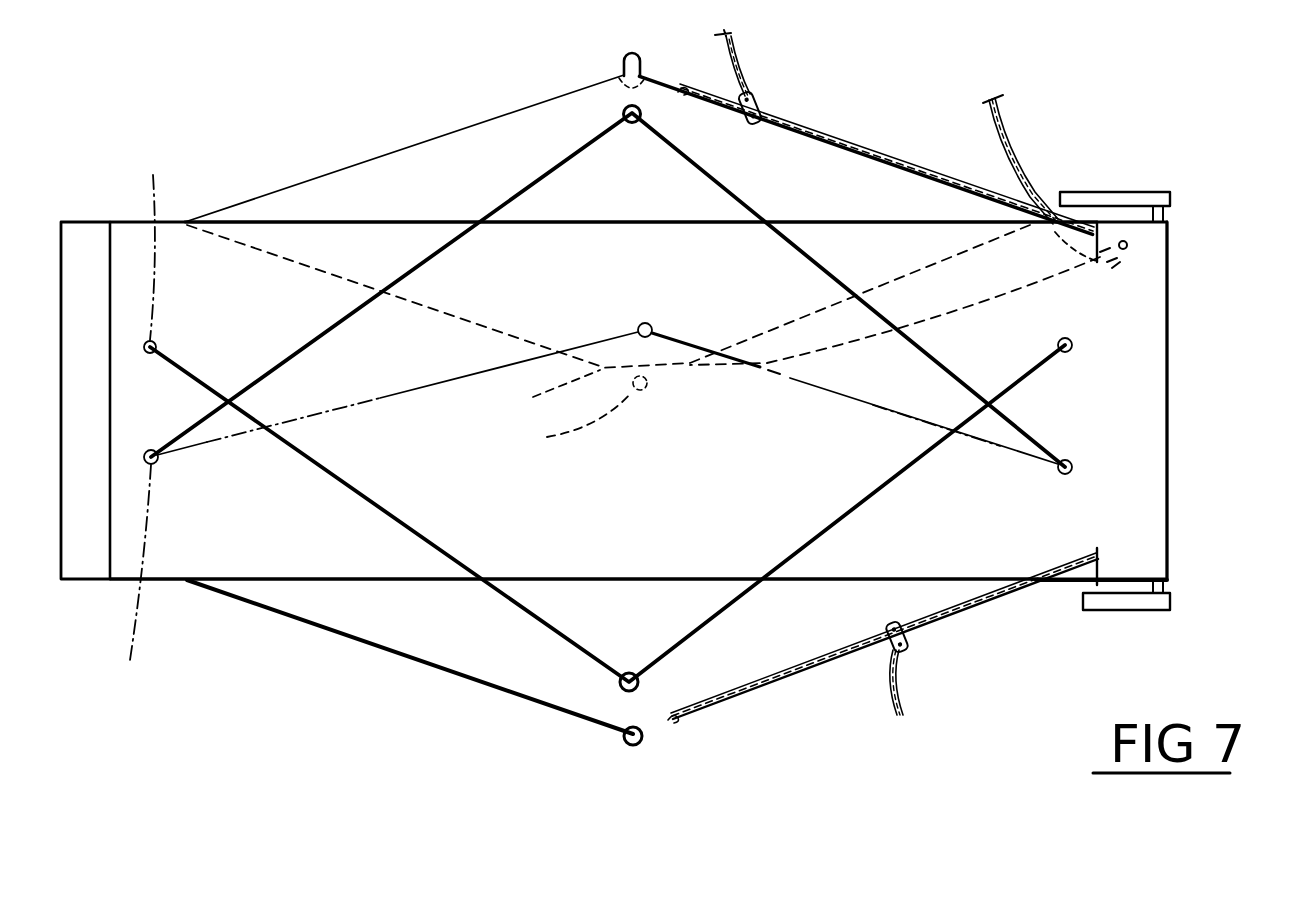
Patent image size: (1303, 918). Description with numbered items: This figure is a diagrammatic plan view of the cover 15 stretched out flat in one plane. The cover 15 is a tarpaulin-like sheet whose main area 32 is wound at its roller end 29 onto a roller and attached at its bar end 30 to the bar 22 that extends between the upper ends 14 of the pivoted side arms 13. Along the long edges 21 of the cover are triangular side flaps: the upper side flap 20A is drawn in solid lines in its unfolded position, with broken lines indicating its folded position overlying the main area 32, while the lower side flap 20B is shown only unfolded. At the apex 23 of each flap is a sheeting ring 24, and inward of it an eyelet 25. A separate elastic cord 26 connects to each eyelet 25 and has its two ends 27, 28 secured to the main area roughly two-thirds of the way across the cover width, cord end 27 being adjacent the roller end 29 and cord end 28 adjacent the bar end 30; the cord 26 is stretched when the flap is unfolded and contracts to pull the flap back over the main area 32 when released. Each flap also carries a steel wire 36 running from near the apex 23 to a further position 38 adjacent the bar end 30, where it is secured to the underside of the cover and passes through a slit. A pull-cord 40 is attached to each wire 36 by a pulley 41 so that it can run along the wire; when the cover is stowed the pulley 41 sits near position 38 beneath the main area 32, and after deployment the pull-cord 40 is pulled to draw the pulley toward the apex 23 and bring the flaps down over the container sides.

The side arms 13 is at (1098, 195).
The upper ends of the side arms 14 is at (1155, 200).
The cover 15 is at (1120, 318).
The upper side flap 20A is at (487, 130).
The lower side flap 20B is at (375, 627).
The long edges of the cover 21 is at (845, 222).
The bar 22 is at (1167, 220).
The apex of the side flap 23 is at (622, 78).
The sheeting ring 24 is at (626, 53).
The eyelet 25 is at (623, 110).
The elastic cord 26 is at (412, 272).
The cord end 27 is at (133, 422).
The cord end 28 is at (1073, 345).
The roller end of the cover 29 is at (128, 282).
The bar end of the cover 30 is at (1172, 539).
The main area of the cover 32 is at (767, 478).
The steel wire 36 is at (977, 185).
The further position 38 is at (1127, 246).
The pull-cord 40 is at (735, 53).
The pulley 41 is at (760, 103).